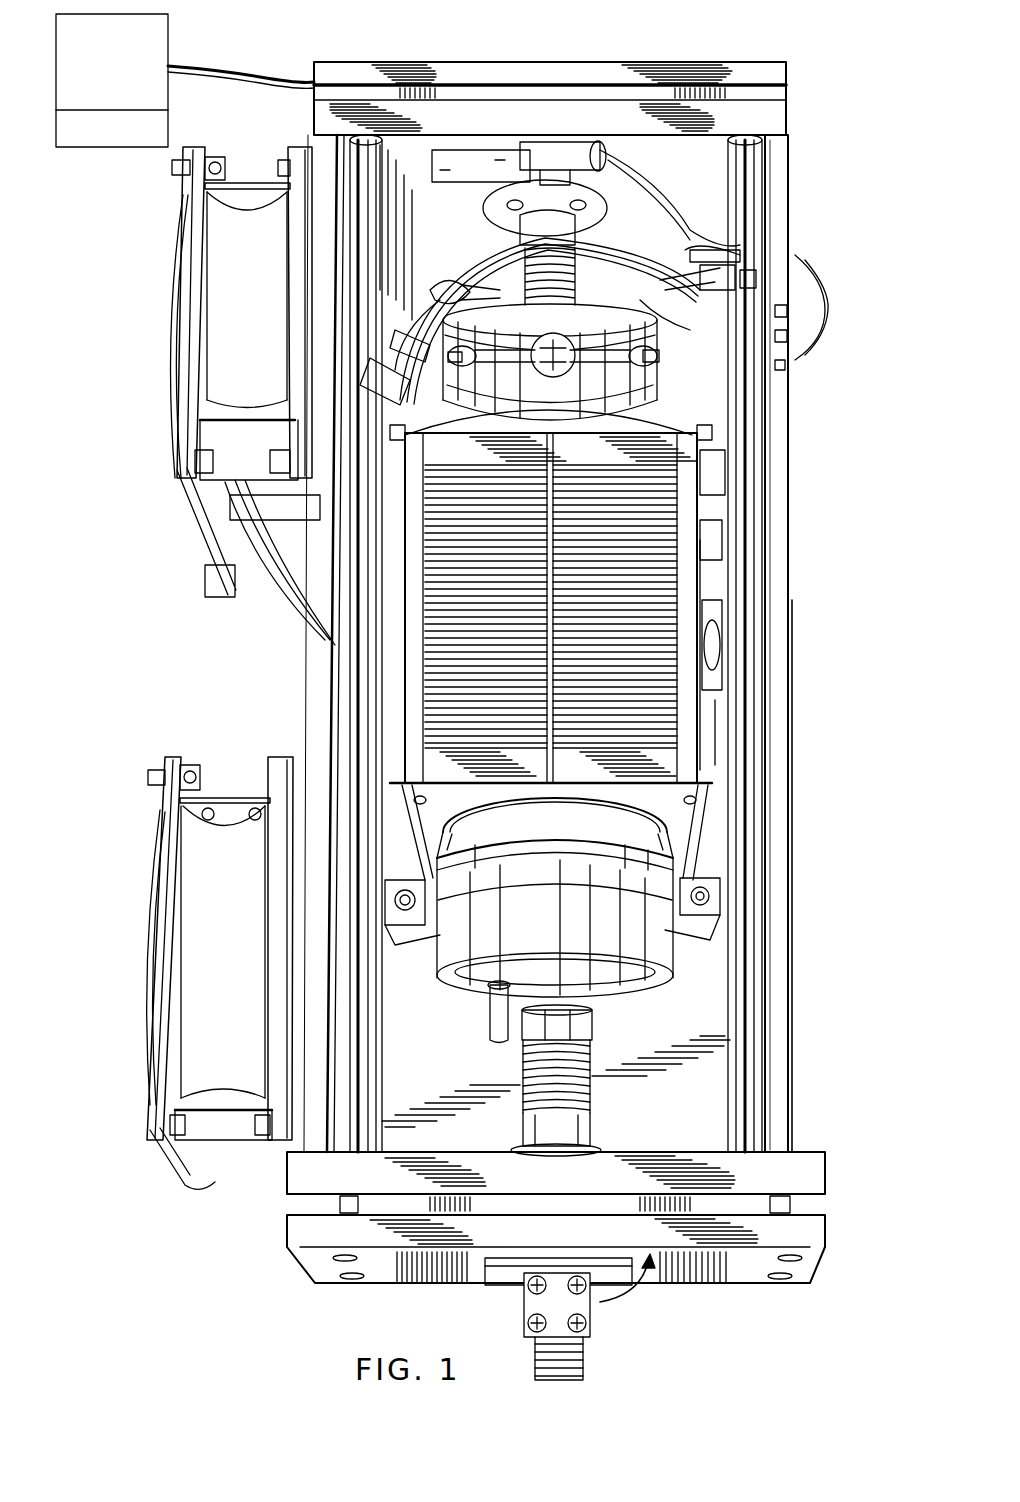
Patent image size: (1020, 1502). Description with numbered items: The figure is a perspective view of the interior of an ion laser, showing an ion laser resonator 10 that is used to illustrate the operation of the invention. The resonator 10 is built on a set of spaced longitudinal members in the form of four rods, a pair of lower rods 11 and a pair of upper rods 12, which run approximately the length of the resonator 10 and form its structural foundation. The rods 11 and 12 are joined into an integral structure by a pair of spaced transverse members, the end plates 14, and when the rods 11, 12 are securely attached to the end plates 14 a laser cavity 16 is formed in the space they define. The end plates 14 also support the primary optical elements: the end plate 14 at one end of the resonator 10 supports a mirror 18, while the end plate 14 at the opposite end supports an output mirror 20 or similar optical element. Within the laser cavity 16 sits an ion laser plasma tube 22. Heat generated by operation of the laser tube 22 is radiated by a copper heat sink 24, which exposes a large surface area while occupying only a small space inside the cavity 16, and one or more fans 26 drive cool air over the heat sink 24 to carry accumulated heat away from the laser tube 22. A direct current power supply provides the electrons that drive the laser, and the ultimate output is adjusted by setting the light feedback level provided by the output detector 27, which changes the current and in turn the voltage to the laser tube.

The ion laser resonator 10 is at (138, 576).
The lower rods 11 is at (372, 945).
The upper rods 12 is at (340, 1138).
The end plates 14 is at (770, 72).
The laser cavity 16 is at (665, 1040).
The mirror 18 is at (558, 190).
The output mirror 20 is at (562, 1147).
The ion laser plasma tube 22 is at (682, 832).
The copper heat sink 24 is at (690, 560).
The fans 26 is at (172, 320).
The output detector 27 is at (572, 1300).